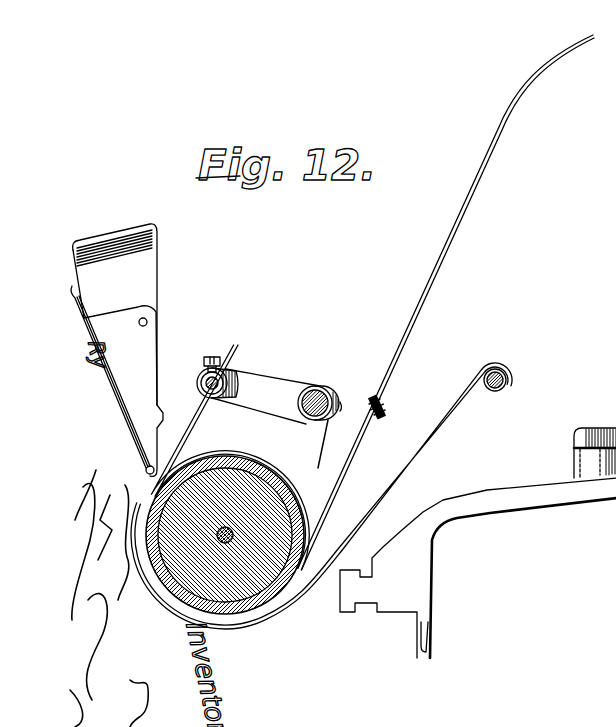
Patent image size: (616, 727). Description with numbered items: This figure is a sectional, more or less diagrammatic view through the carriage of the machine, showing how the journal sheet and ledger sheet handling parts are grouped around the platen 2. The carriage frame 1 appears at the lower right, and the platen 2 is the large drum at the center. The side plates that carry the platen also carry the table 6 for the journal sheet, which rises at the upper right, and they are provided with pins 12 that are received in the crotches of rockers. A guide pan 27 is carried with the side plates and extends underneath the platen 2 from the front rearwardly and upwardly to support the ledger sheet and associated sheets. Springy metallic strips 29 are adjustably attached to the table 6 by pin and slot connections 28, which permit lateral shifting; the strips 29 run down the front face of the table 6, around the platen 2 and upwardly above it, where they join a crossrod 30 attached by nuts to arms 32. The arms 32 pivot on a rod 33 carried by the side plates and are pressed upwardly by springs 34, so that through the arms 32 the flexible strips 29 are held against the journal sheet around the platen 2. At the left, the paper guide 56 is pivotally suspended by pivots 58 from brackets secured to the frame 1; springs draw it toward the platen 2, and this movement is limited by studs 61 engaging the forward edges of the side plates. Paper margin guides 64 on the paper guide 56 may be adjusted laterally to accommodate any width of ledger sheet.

The frame 1 is at (508, 503).
The platen 2 is at (286, 489).
The table 6 is at (460, 222).
The pins 12 is at (509, 378).
The guide pan 27 is at (415, 462).
The pin and slot connections 28 is at (381, 413).
The springy metallic strips 29 is at (212, 421).
The crossrod 30 is at (225, 365).
The arms 32 is at (277, 382).
The rod 33 is at (336, 405).
The springs 34 is at (262, 418).
The paper guide 56 is at (84, 303).
The pivots 58 is at (148, 320).
The studs 61 is at (146, 470).
The paper margin guides 64 is at (148, 260).